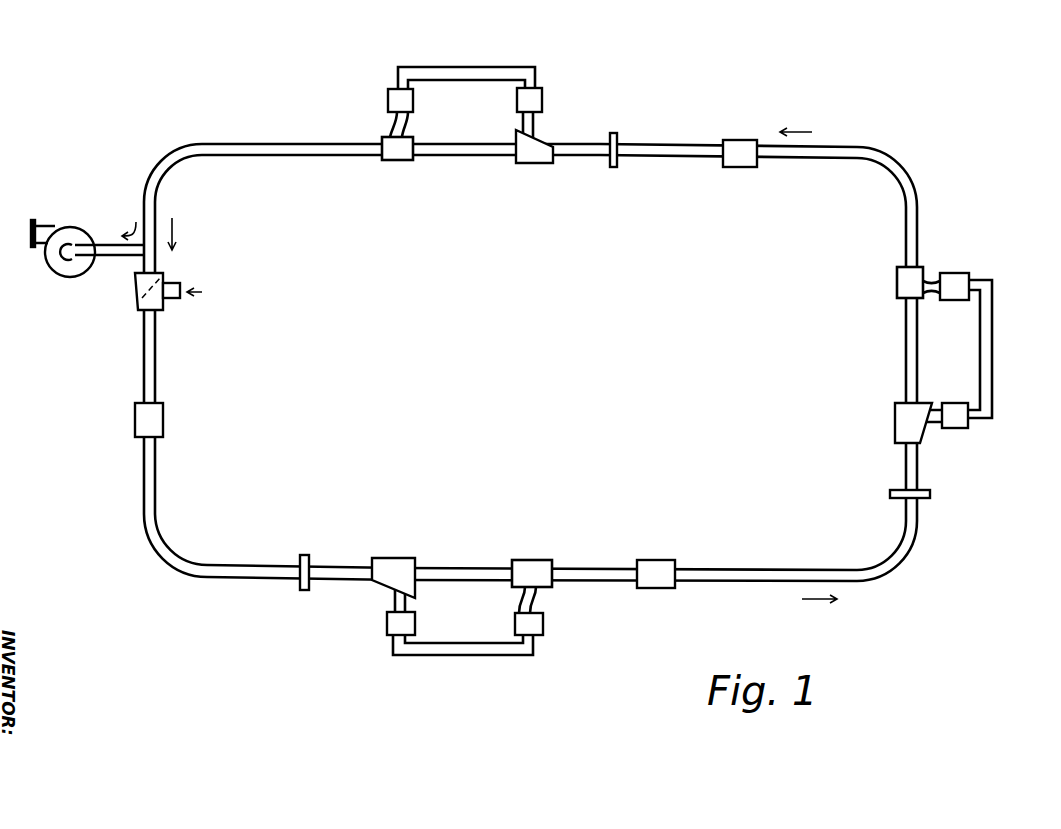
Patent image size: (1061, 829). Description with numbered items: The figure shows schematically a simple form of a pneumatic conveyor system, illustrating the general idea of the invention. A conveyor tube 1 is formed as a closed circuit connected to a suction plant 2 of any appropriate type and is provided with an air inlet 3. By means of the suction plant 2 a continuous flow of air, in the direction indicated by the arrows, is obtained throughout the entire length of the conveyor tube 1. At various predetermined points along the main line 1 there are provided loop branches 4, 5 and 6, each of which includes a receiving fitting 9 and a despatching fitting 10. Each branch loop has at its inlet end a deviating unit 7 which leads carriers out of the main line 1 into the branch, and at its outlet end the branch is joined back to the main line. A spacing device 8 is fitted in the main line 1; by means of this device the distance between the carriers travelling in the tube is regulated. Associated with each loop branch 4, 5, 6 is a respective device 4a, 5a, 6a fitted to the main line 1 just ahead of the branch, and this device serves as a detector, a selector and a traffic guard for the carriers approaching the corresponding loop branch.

The conveyor tube 1 is at (790, 575).
The suction plant 2 is at (80, 228).
The air inlet 3 is at (142, 306).
The loop branch 4 is at (476, 650).
The detector, selector and traffic guard device 4a is at (304, 590).
The loop branch 5 is at (990, 347).
The detector, selector and traffic guard device 5a is at (931, 496).
The loop branch 6 is at (475, 75).
The detector, selector and traffic guard device 6a is at (614, 136).
The deviating unit 7 is at (534, 149).
The spacing device 8 is at (736, 149).
The receiving fitting 9 is at (543, 101).
The despatching fitting 10 is at (392, 100).